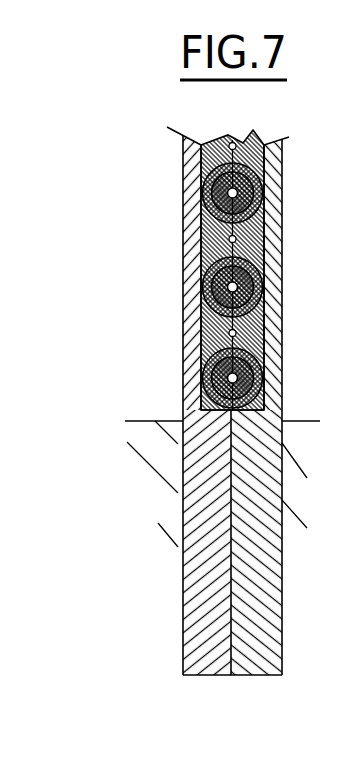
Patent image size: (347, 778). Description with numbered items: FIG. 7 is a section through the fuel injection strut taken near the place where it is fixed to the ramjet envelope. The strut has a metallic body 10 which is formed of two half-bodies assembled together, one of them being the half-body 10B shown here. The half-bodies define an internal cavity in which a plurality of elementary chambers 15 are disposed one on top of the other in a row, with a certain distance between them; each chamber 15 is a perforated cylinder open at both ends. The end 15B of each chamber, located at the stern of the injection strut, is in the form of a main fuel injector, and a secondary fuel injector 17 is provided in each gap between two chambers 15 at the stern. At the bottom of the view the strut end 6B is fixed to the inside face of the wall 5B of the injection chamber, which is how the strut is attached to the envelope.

The metallic body 10 is at (284, 175).
The half-body 10B is at (183, 182).
The elementary chamber 15 is at (203, 203).
The other end of chamber 15B is at (228, 378).
The secondary fuel injector 17 is at (229, 333).
The wall of injection chamber 5B is at (315, 437).
The end of injection strut 6B is at (190, 597).